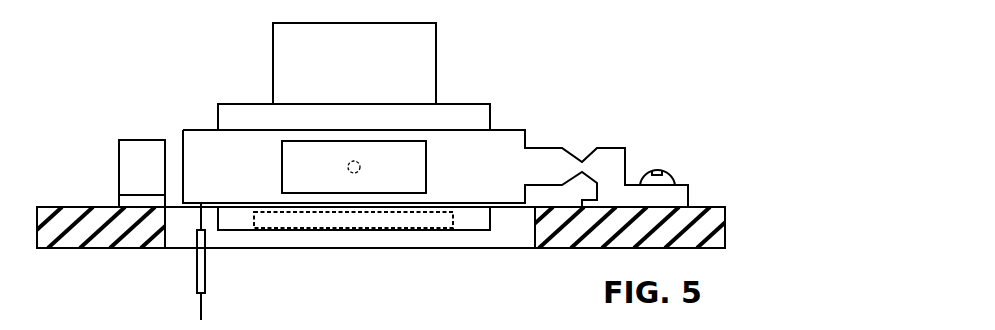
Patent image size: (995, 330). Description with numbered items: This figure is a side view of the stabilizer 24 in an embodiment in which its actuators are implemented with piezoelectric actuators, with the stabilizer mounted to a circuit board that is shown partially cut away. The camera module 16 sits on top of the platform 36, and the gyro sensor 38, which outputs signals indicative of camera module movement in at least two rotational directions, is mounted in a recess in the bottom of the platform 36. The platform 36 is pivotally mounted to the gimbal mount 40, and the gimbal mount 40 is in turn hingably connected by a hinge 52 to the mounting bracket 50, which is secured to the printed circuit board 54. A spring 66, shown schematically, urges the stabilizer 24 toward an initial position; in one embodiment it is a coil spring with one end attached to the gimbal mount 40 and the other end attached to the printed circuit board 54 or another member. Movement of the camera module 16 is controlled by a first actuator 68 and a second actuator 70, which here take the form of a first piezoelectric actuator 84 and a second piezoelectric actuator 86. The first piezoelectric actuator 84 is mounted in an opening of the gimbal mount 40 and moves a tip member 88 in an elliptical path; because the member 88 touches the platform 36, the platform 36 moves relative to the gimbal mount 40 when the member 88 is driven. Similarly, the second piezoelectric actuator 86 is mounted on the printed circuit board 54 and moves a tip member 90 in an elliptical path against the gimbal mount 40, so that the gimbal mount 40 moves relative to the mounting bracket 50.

The camera module 16 is at (436, 58).
The stabilizer 24 is at (115, 90).
The platform 36 is at (481, 102).
The gyro sensor 38 is at (443, 220).
The gimbal mount 40 is at (510, 130).
The mounting bracket 50 is at (614, 148).
The hinge 52 is at (582, 128).
The printed circuit board 54 is at (705, 207).
The spring 66 is at (197, 276).
The first actuator 68 is at (270, 169).
The second actuator 70 is at (107, 167).
The first piezoelectric actuator 84 is at (310, 185).
The second piezoelectric actuator 86 is at (141, 140).
The member 88 is at (354, 174).
The member 90 is at (166, 163).